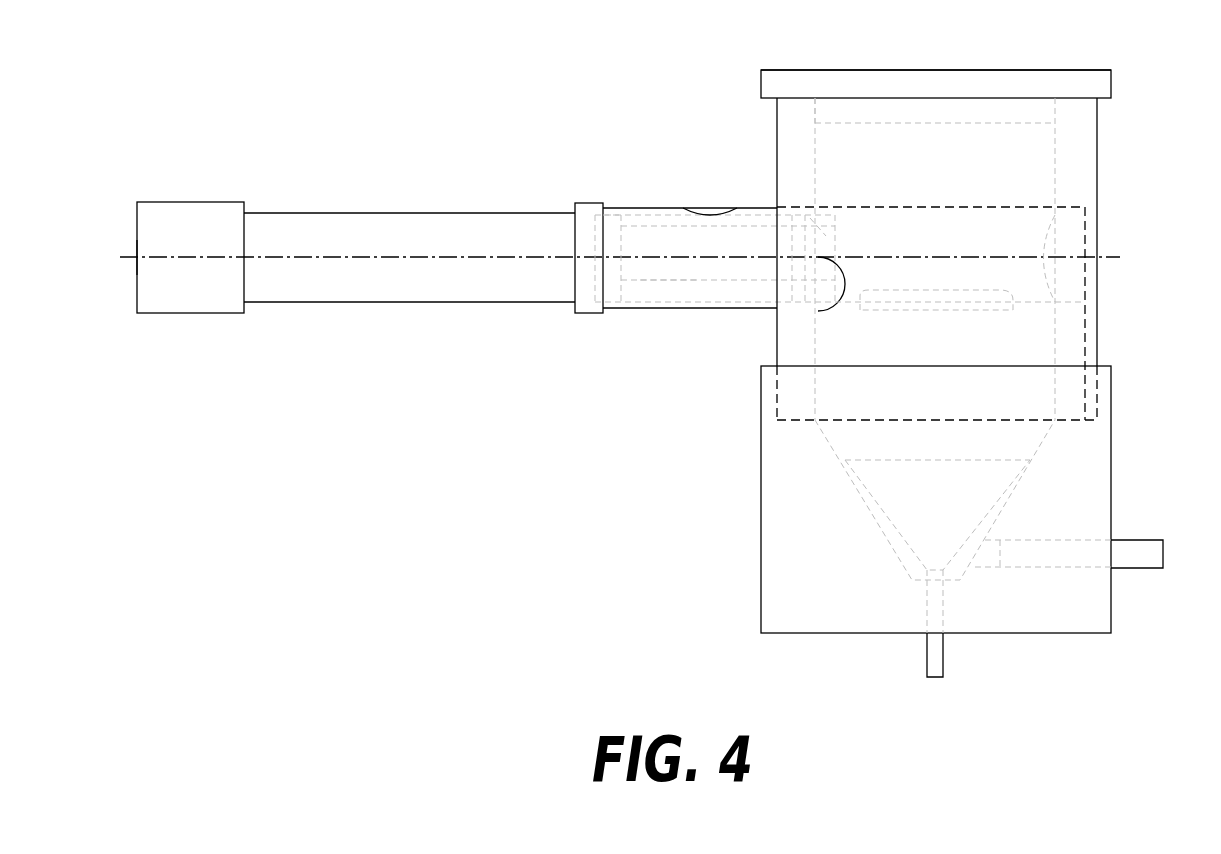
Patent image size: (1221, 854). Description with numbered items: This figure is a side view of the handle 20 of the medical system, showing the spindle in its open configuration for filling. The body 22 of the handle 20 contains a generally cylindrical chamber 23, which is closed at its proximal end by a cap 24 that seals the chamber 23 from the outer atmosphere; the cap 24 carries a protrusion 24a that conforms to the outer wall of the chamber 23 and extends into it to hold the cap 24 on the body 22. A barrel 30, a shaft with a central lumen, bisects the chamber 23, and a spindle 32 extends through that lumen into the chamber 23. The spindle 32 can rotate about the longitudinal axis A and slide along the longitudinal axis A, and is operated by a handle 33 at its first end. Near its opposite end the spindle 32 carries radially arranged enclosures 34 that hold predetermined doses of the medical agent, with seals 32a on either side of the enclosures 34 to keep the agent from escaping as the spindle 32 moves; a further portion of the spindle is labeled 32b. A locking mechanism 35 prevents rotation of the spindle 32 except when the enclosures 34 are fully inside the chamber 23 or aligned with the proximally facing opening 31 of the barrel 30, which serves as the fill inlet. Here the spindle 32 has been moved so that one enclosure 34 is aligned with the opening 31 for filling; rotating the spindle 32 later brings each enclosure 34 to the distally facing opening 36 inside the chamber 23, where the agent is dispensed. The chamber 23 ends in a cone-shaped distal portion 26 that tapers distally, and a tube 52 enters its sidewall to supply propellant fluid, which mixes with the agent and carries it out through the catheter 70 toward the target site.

The handle 20 is at (1162, 80).
The body 22 is at (1100, 192).
The chamber 23 is at (1040, 163).
The cap 24 is at (785, 75).
The protrusion 24a is at (820, 107).
The distal portion 26 is at (868, 476).
The barrel 30 is at (591, 203).
The proximally facing opening 31 is at (705, 207).
The spindle 32 is at (210, 207).
The seals 32a is at (615, 213).
The shaft second portion 32b is at (645, 232).
The handle 33 is at (137, 258).
The enclosures 34 is at (655, 240).
The locking mechanism 35 is at (818, 311).
The distally facing opening 36 is at (990, 307).
The tube 52 is at (1128, 552).
The catheter 70 is at (937, 655).
The longitudinal axis A is at (303, 257).